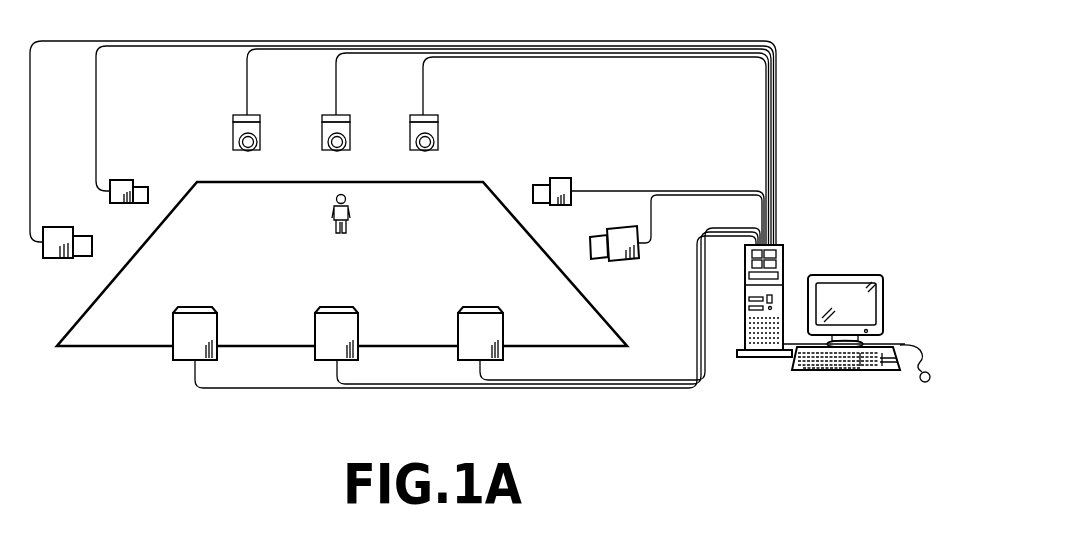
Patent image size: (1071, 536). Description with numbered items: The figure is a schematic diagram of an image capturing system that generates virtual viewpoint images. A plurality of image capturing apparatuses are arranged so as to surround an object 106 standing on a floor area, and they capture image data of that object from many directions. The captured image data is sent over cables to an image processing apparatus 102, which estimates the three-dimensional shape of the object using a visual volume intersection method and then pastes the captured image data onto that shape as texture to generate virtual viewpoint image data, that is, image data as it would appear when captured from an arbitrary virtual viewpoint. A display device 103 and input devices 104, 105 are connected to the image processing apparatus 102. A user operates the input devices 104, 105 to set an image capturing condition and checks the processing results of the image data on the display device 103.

The image processing apparatus 102 is at (784, 254).
The display device 103 is at (862, 275).
The input device 104 is at (835, 370).
The input device 105 is at (925, 382).
The object 106 is at (352, 206).